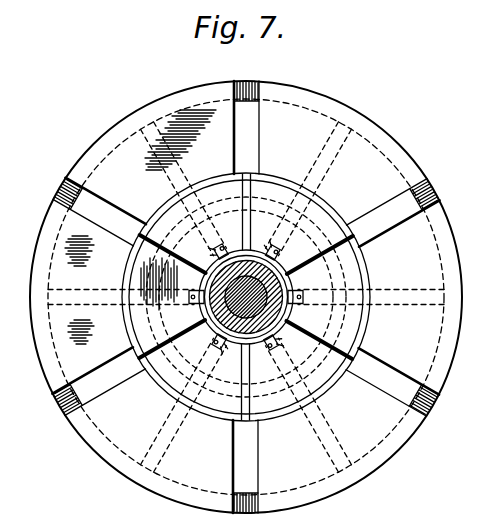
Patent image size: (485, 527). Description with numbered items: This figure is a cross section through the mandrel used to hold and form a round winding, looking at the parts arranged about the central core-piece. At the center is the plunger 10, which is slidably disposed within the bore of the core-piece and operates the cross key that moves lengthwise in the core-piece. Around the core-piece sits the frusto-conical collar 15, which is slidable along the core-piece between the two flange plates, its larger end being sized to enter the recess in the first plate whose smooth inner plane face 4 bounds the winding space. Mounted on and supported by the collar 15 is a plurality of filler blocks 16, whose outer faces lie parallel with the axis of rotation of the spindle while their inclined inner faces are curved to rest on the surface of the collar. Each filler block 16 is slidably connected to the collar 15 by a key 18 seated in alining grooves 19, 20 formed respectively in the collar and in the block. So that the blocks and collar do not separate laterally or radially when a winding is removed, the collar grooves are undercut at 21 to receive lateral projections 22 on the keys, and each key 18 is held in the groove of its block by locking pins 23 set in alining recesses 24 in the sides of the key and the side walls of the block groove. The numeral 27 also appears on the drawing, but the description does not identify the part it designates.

The inner plane face 4 is at (181, 97).
The plunger 10 is at (246, 297).
The collar 15 is at (320, 323).
The filler blocks 16 is at (226, 177).
The key 18 is at (224, 242).
The groove 19 is at (208, 252).
The groove 20 is at (210, 243).
The undercut 21 is at (197, 288).
The lateral projections 22 is at (197, 309).
The locking pins 23 is at (208, 341).
The recesses 24 is at (225, 366).
The hub 27 is at (246, 334).